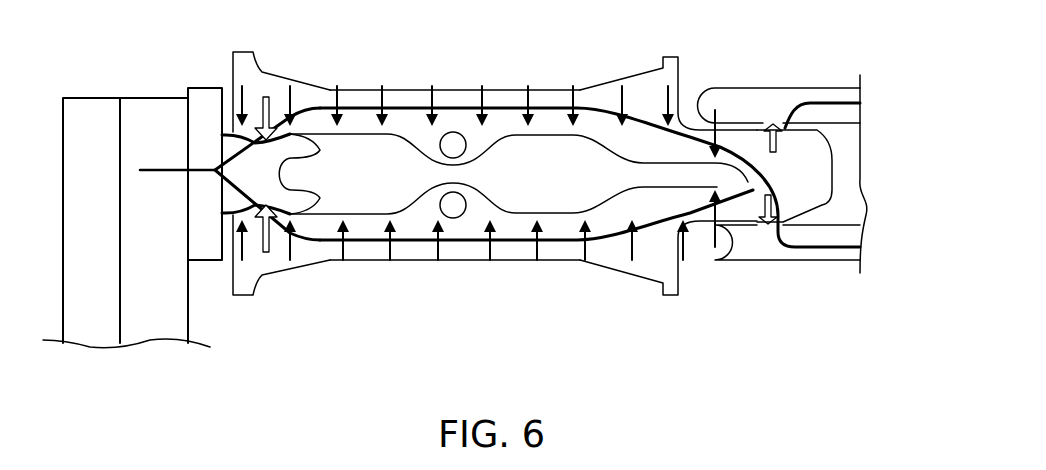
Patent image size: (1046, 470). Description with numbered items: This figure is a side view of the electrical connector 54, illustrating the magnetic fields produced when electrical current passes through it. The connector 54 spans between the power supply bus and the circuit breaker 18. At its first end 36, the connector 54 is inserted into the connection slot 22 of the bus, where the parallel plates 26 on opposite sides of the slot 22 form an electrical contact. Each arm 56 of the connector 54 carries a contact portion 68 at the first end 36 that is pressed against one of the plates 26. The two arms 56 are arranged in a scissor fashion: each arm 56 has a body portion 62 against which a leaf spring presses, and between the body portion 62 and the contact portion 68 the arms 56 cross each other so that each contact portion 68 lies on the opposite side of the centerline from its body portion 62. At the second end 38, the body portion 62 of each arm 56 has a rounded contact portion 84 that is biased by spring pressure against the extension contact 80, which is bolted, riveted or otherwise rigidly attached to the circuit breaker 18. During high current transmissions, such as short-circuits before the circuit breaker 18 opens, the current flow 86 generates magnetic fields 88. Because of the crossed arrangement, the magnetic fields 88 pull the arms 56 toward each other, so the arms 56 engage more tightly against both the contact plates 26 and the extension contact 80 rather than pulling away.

The circuit breaker 18 is at (98, 98).
The connection slot 22 is at (848, 167).
The parallel plates 26 is at (808, 88).
The first end 36 is at (833, 212).
The second end 38 is at (279, 316).
The connector 54 is at (515, 53).
The arm 56 is at (356, 88).
The body portion 62 is at (457, 100).
The contact portion 68 is at (772, 124).
The extension contact 80 is at (238, 163).
The rounded contact portion 84 is at (256, 140).
The current flow 86 is at (601, 107).
The magnetic fields 88 is at (382, 92).